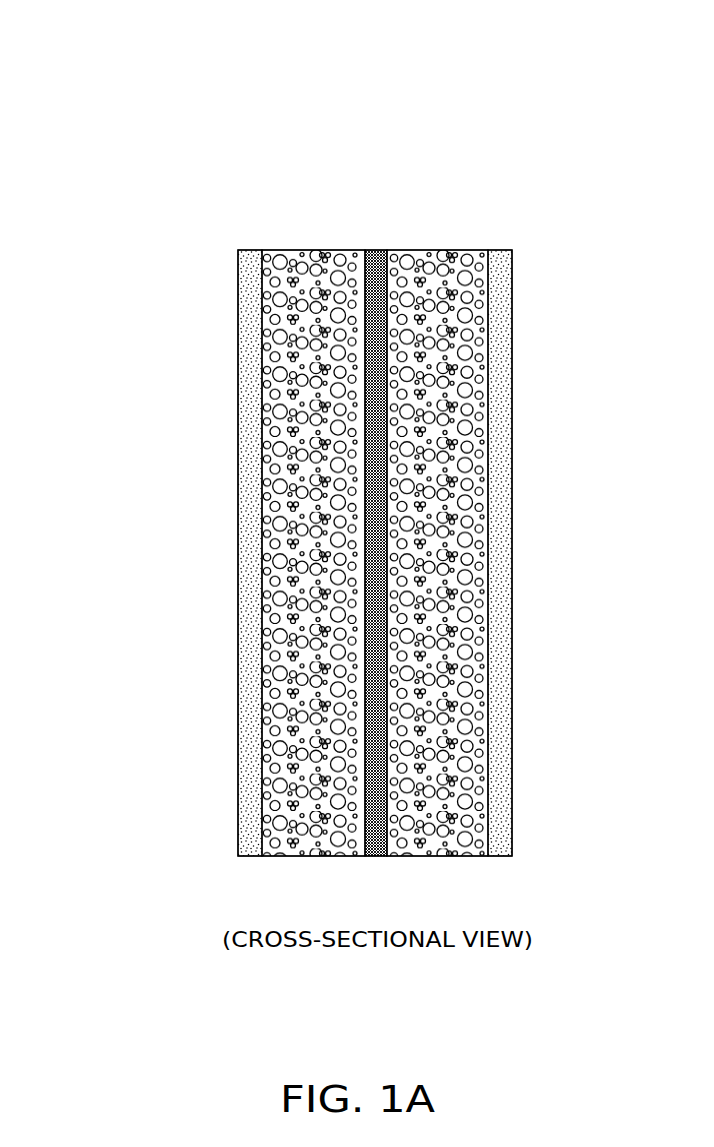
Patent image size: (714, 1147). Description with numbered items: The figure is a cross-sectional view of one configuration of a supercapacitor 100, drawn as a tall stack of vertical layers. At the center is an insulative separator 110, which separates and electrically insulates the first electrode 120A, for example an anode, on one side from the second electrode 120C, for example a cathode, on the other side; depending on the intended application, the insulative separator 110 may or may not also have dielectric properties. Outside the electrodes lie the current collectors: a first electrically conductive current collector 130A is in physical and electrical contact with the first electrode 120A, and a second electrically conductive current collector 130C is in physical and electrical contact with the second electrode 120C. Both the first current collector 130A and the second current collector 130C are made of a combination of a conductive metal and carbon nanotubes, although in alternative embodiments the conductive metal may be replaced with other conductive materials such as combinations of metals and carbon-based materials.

The supercapacitor 100 is at (177, 120).
The insulative separator 110 is at (367, 250).
The first electrode 120A is at (318, 250).
The second electrode 120C is at (446, 250).
The first electrically conductive current collector 130A is at (238, 468).
The second electrically conductive current collector 130C is at (512, 453).